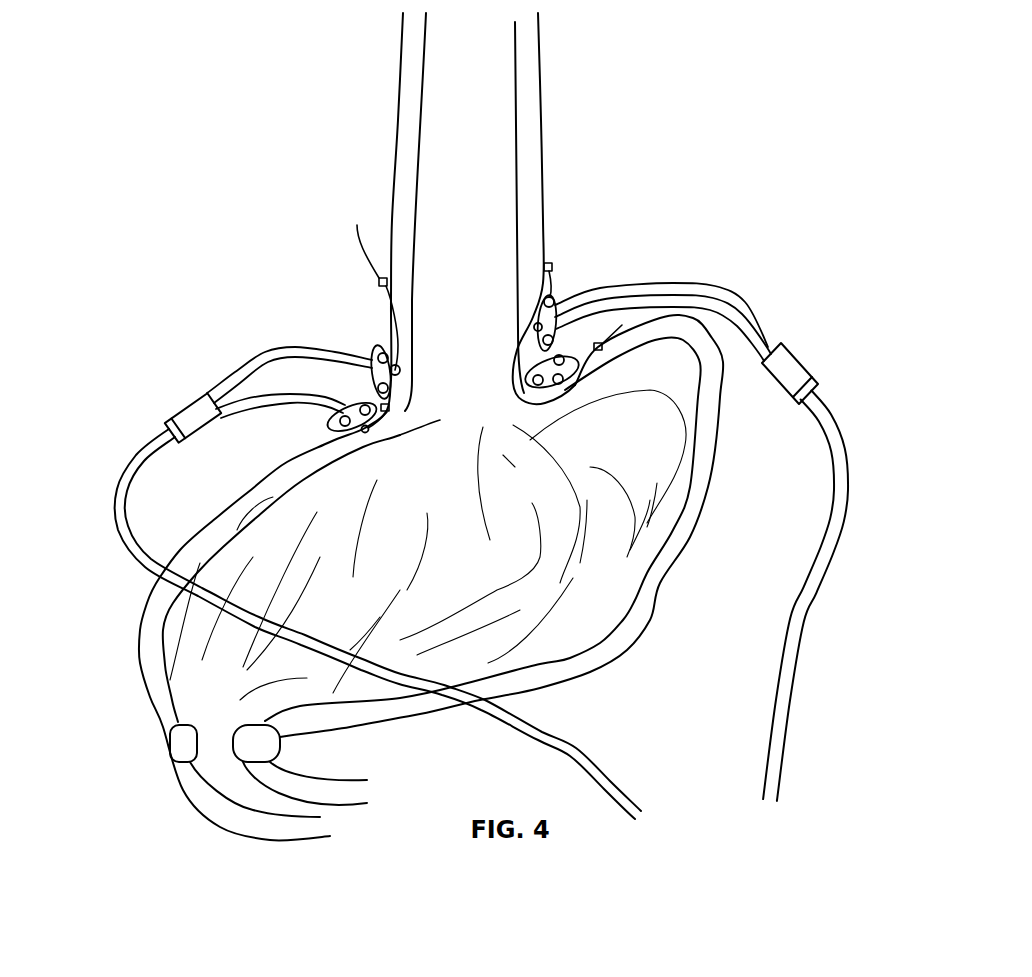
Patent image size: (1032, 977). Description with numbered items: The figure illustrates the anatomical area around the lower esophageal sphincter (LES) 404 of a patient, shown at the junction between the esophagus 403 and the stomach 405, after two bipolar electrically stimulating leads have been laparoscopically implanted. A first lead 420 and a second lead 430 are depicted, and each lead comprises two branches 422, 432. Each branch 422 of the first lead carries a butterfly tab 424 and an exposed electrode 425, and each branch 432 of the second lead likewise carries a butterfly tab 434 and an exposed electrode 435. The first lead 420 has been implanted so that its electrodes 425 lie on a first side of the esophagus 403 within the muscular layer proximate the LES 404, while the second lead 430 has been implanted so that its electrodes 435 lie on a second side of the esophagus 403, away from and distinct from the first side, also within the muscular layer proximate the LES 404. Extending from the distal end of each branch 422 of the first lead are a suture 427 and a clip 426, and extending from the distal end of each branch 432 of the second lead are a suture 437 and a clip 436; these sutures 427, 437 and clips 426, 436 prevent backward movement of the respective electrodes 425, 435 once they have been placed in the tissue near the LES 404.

The esophagus 403 is at (498, 107).
The lower esophageal sphincter (LES) 404 is at (477, 380).
The stomach 405 is at (620, 587).
The first lead 420 is at (125, 540).
The branch 422 is at (290, 347).
The butterfly tab 424 is at (375, 350).
The exposed electrode 425 is at (400, 368).
The clip 426 is at (379, 283).
The suture 427 is at (362, 255).
The second lead 430 is at (797, 680).
The branch 432 is at (752, 312).
The butterfly tab 434 is at (553, 303).
The exposed electrode 435 is at (534, 328).
The clip 436 is at (549, 263).
The suture 437 is at (551, 268).